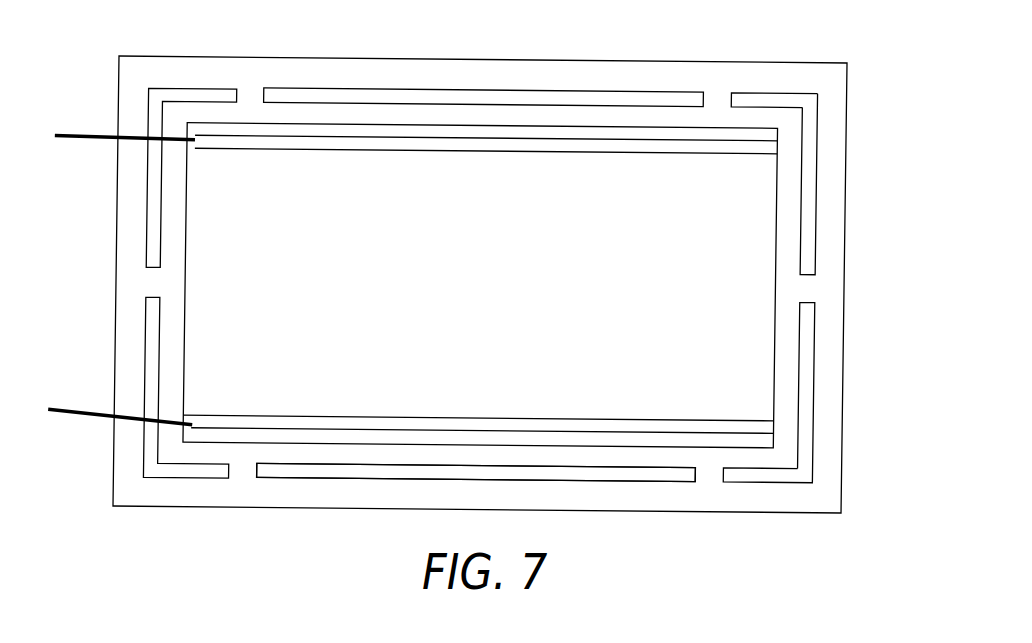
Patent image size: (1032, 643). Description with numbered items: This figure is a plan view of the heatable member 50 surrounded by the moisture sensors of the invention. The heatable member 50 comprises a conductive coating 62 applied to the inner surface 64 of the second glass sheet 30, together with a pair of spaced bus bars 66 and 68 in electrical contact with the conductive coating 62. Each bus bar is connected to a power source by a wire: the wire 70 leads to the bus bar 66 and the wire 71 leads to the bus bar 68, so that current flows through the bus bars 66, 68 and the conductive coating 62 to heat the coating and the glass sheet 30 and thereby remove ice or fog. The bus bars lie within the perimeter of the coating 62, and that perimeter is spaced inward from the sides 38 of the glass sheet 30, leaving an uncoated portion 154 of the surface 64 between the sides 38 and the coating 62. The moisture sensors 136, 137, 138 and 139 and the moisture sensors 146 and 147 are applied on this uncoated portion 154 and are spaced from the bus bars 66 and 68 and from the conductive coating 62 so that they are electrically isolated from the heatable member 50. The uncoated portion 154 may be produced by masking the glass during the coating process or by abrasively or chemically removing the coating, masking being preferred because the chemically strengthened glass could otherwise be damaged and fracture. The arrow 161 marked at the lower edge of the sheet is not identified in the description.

The second glass sheet 30 is at (825, 443).
The sides of the glass sheet 38 is at (780, 62).
The heatable member 50 is at (116, 281).
The conductive coating 62 is at (493, 306).
The inner surface of the second glass sheet 64 is at (553, 79).
The bus bar 66 is at (608, 421).
The bus bar 68 is at (637, 148).
The wire 70 is at (75, 422).
The wire 71 is at (70, 132).
The moisture sensor 136 is at (813, 180).
The moisture sensor 137 is at (196, 88).
The moisture sensor 138 is at (140, 360).
The moisture sensor 139 is at (803, 398).
The moisture sensor 146 is at (485, 88).
The moisture sensor 147 is at (638, 475).
The uncoated portion 154 is at (720, 80).
The thickness 161 is at (148, 508).